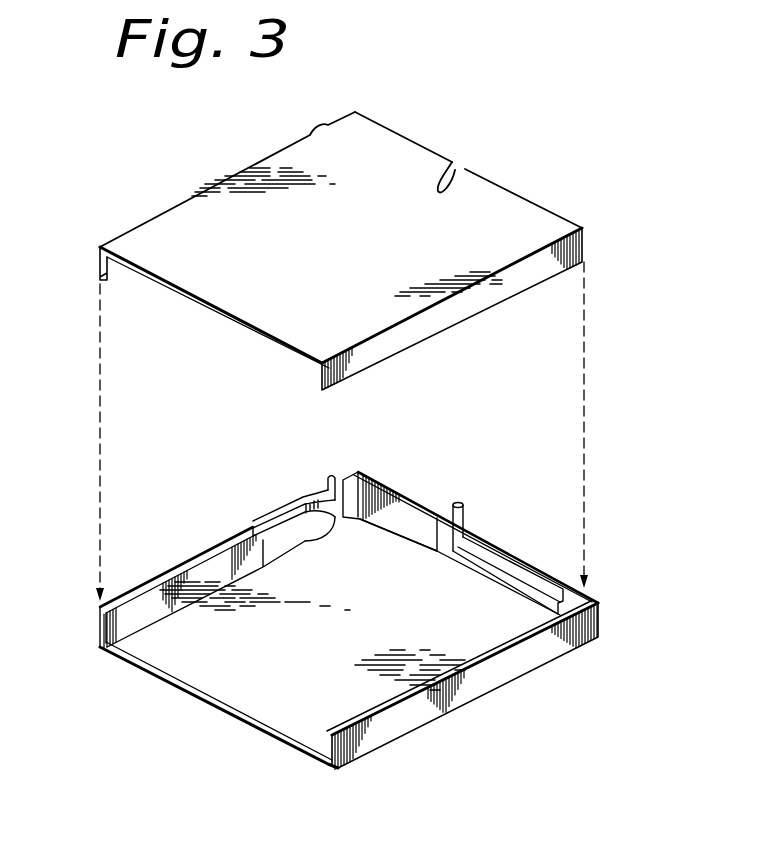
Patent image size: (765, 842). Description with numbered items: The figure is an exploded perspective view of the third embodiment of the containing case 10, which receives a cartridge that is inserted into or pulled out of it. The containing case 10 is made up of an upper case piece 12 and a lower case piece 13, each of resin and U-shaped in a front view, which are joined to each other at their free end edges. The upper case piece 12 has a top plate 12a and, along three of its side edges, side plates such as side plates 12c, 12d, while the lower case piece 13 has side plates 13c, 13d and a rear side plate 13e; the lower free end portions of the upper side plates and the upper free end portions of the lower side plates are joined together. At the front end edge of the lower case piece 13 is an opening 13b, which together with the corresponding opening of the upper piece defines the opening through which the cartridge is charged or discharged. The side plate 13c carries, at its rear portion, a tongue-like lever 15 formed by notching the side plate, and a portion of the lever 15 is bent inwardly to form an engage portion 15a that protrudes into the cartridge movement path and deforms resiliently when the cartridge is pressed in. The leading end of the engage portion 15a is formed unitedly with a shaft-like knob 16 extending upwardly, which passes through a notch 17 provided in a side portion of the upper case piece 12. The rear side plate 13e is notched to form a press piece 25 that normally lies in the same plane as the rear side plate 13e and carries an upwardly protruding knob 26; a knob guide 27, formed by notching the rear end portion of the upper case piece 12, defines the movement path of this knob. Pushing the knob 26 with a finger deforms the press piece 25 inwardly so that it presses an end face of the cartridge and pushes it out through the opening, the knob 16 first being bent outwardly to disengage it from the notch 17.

The containing case 10 is at (613, 386).
The upper case piece 12 is at (540, 228).
The top plate 12a is at (208, 312).
The side plate 12c is at (105, 270).
The side plate 12d is at (511, 288).
The lower case piece 13 is at (549, 668).
The opening 13b is at (230, 705).
The side plate 13c is at (173, 580).
The side plate 13d is at (413, 718).
The rear side plate 13e is at (398, 505).
The tongue-like lever 15 is at (270, 522).
The engage portion 15a is at (316, 504).
The knob 16 is at (334, 476).
The notch 17 is at (321, 128).
The press piece 25 is at (530, 570).
The knob 26 is at (459, 502).
The knob guide 27 is at (463, 167).